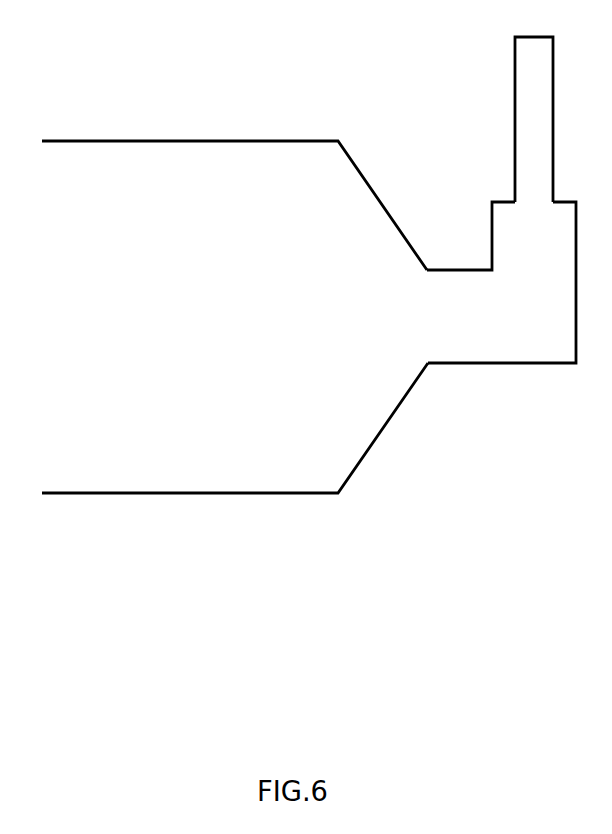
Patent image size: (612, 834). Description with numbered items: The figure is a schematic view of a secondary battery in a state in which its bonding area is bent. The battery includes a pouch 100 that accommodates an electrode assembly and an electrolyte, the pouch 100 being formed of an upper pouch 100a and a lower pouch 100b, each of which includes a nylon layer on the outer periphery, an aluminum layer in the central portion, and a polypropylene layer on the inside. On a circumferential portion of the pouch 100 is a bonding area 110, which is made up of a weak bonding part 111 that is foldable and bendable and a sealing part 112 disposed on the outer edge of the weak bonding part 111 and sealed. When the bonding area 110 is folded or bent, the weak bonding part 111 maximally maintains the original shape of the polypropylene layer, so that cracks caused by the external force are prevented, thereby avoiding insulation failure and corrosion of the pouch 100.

The pouch 100 is at (68, 100).
The upper pouch 100a is at (190, 140).
The lower pouch 100b is at (192, 495).
The bonding area 110 is at (430, 63).
The weak bonding part 111 is at (490, 258).
The sealing part 112 is at (524, 68).